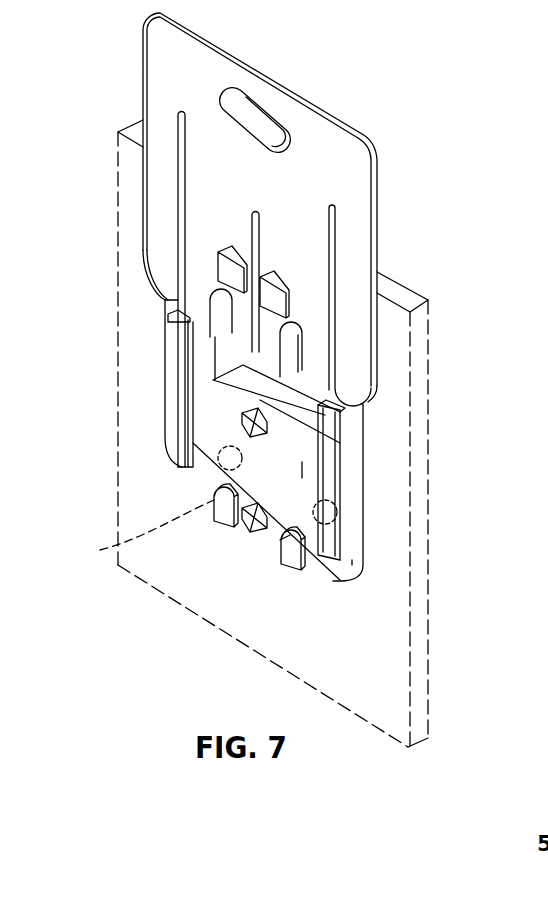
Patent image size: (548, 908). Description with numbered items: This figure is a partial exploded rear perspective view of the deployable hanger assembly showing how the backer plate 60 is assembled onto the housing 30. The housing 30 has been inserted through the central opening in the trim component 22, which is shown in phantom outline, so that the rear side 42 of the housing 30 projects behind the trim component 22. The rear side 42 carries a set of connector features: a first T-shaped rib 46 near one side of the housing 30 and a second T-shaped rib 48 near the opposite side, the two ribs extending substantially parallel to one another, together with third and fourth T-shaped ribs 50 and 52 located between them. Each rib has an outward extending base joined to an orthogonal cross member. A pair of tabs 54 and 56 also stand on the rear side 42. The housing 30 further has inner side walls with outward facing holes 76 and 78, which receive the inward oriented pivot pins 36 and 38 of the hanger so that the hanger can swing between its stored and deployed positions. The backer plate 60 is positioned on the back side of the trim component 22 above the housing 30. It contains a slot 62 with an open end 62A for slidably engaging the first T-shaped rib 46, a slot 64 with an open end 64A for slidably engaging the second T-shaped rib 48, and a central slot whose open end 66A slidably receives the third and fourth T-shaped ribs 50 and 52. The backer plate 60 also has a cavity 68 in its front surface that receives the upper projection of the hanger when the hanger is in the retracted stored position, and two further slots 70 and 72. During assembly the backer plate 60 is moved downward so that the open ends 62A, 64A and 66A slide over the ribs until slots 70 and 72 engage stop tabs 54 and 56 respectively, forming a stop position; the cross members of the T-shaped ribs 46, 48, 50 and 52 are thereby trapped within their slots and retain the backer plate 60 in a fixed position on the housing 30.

The trim component 22 is at (382, 687).
The housing 30 is at (352, 565).
The pivot pin 36 is at (222, 462).
The pivot pin 38 is at (343, 500).
The rear side 42 is at (305, 478).
The first T-shaped rib 46 is at (174, 377).
The second T-shaped rib 48 is at (333, 452).
The third T-shaped rib 50 is at (213, 445).
The fourth T-shaped rib 52 is at (247, 527).
The tab 54 is at (217, 503).
The tab 56 is at (298, 545).
The backer plate 60 is at (148, 24).
The slot 62 is at (180, 137).
The open end 62A is at (165, 298).
The slot 64 is at (332, 229).
The open end 64A is at (343, 418).
The open end 66A is at (297, 363).
The cavity 68 is at (260, 127).
The slot 70 is at (252, 352).
The slot 72 is at (215, 400).
The hole 76 is at (212, 448).
The hole 78 is at (280, 540).